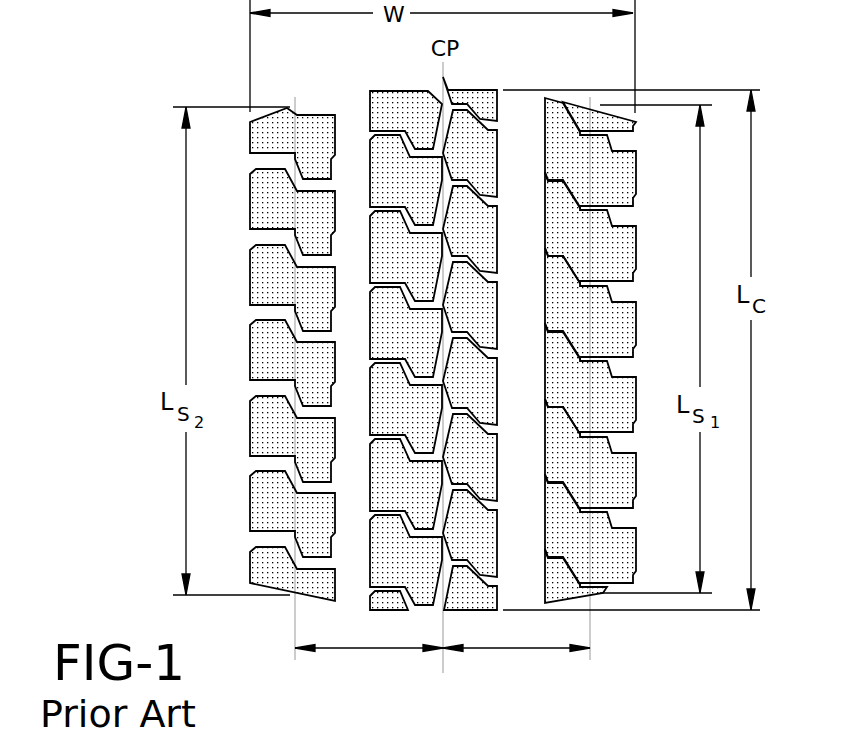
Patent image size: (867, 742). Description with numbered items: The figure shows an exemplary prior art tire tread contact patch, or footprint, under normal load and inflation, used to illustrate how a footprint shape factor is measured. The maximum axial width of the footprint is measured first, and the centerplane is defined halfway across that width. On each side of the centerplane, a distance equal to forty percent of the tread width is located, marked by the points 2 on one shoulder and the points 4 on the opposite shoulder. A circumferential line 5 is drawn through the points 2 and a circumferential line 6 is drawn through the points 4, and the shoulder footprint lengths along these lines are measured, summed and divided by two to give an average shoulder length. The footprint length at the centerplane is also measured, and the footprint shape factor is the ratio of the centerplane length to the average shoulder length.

The point at 40% of tread width 2 is at (611, 345).
The point at 40% of tread width 4 is at (270, 337).
The circumferential line 5 is at (628, 297).
The circumferential line 6 is at (262, 314).